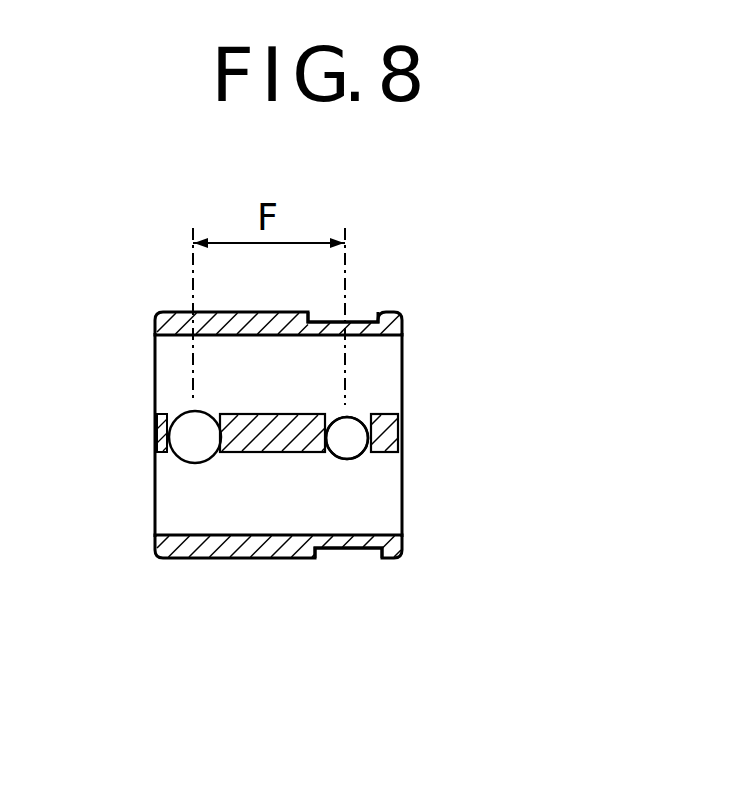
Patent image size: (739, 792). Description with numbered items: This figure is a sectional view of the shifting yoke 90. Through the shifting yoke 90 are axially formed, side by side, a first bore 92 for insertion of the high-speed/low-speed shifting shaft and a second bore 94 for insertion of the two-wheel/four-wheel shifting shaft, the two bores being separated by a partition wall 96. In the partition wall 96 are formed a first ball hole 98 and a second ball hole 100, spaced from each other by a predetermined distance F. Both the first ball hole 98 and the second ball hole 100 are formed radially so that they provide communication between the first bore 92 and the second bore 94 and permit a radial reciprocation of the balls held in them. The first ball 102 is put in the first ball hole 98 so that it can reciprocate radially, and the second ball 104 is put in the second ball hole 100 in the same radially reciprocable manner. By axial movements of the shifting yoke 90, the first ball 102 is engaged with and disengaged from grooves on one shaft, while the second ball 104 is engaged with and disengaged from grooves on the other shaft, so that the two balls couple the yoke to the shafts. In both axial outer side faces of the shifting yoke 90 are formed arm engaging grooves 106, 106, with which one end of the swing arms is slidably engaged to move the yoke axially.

The shifting yoke 90 is at (474, 278).
The first bore 92 is at (377, 336).
The second bore 94 is at (361, 533).
The partition wall 96 is at (394, 437).
The first ball hole 98 is at (184, 434).
The second ball hole 100 is at (349, 438).
The first ball 102 is at (193, 447).
The second ball 104 is at (350, 450).
The arm engaging groove 106 is at (365, 313).